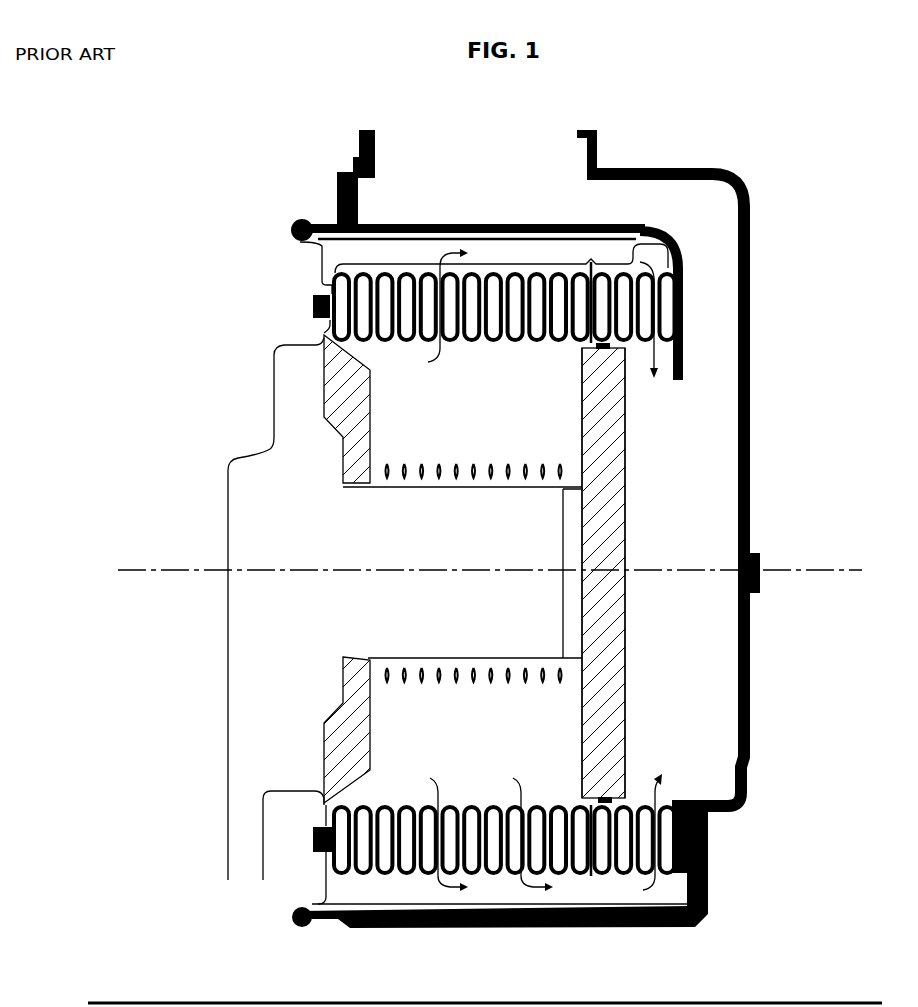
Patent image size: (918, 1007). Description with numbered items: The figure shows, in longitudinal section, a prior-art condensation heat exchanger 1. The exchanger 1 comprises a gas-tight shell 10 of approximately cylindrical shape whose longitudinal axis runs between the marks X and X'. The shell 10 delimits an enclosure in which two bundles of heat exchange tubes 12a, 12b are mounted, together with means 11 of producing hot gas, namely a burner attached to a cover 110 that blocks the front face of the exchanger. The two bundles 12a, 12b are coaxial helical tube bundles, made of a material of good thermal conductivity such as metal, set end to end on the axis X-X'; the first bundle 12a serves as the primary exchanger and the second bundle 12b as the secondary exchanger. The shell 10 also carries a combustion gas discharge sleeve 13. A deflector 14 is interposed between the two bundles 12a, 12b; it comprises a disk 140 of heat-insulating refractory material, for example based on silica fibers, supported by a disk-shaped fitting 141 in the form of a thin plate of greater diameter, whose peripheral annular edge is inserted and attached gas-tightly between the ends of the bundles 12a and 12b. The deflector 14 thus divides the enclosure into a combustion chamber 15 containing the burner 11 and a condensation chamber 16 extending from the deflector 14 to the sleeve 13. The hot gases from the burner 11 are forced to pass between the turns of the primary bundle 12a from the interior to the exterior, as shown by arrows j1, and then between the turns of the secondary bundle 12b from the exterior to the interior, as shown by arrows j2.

The exchanger 1 is at (195, 267).
The gas-tight shell 10 is at (418, 929).
The means of producing hot gas 11 is at (482, 551).
The first bundle of heat exchange tubes 12a is at (491, 264).
The second bundle of heat exchange tubes 12b is at (633, 262).
The combustion gas discharge sleeve 13 is at (597, 152).
The deflector 14 is at (646, 656).
The disk 140 is at (608, 440).
The disk-shaped fitting 141 is at (624, 515).
The combustion chamber 15 is at (482, 438).
The condensation chamber 16 is at (692, 636).
The cover 110 is at (298, 390).
The arrows j1 is at (489, 572).
The arrows j2 is at (650, 576).
The longitudinal axis end X is at (490, 537).
The longitudinal axis end X' is at (861, 537).